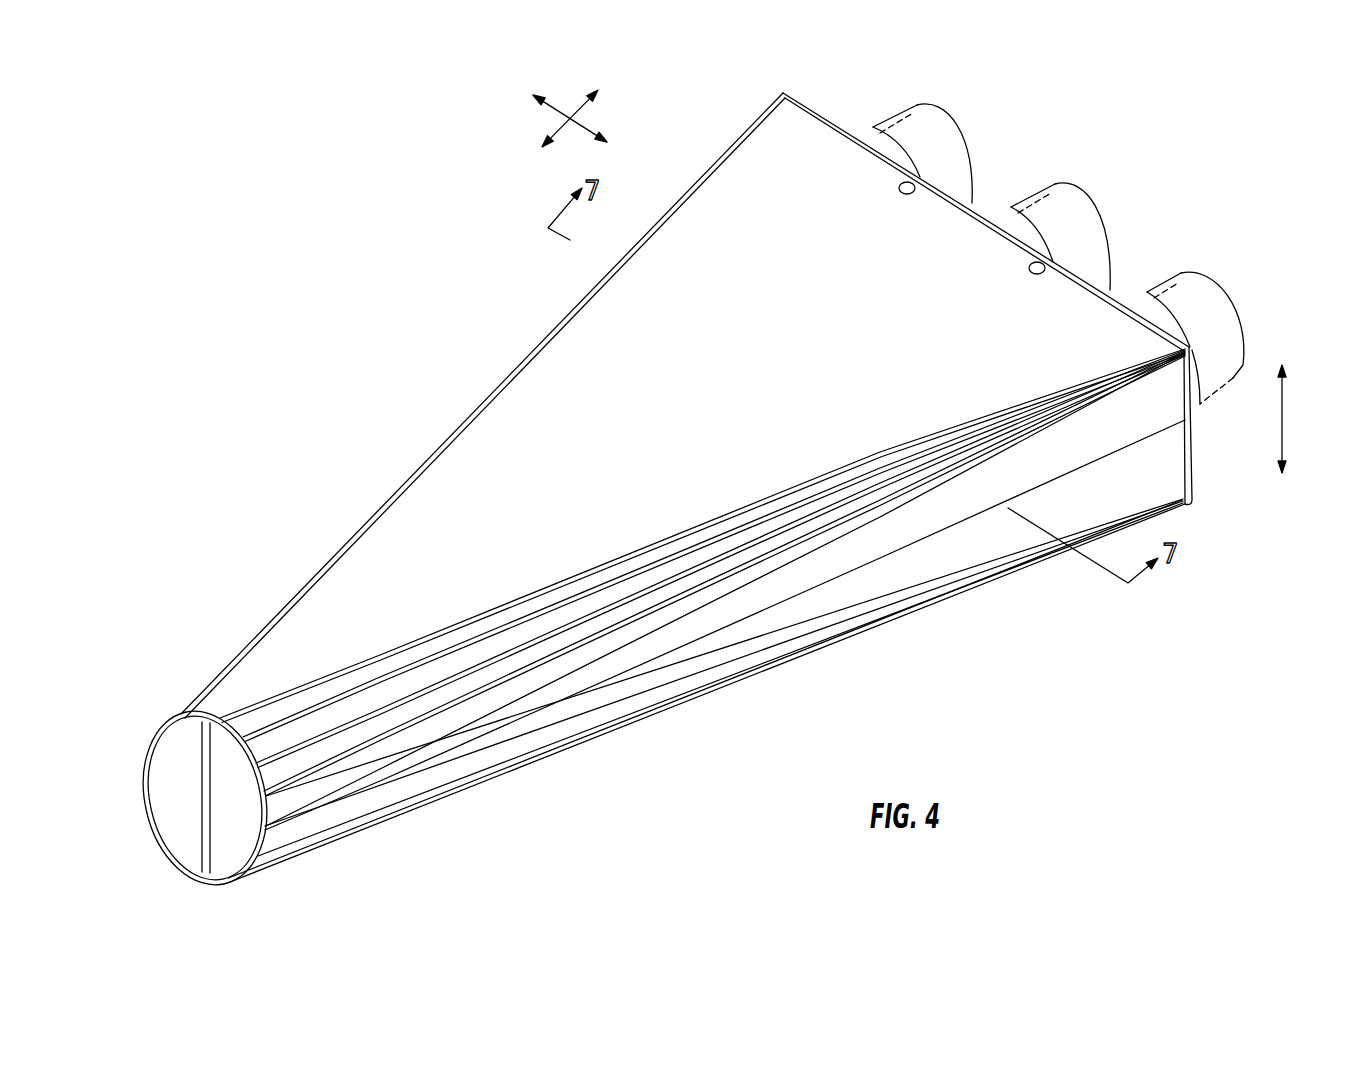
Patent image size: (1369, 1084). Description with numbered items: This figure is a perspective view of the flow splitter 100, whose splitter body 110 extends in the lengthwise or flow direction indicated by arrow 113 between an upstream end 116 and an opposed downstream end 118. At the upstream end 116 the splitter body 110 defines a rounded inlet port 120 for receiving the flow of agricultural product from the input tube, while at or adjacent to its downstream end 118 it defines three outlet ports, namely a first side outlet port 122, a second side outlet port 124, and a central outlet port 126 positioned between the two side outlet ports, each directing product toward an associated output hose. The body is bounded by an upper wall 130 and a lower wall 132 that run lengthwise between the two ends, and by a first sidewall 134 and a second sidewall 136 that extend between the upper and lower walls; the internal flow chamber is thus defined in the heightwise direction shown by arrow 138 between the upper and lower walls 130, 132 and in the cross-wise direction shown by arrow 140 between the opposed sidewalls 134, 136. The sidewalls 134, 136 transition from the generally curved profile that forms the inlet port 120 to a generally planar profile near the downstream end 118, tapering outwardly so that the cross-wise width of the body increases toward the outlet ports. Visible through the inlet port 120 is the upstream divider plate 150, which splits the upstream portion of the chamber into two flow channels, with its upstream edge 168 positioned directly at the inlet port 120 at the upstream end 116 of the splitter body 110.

The flow splitter 100 is at (672, 503).
The splitter body 110 is at (672, 503).
The lengthwise or flow direction 113 is at (543, 96).
The upstream end 116 is at (169, 808).
The downstream end 118 is at (1021, 141).
The inlet port 120 is at (150, 815).
The first side outlet port 122 is at (917, 104).
The second side outlet port 124 is at (1226, 300).
The central outlet port 126 is at (1078, 207).
The upper wall 130 is at (592, 345).
The lower wall 132 is at (645, 723).
The first sidewall 134 is at (350, 522).
The second sidewall 136 is at (835, 605).
The heightwise direction 138 is at (1283, 405).
The cross-wise direction 140 is at (563, 108).
The upstream divider plate 150 is at (223, 840).
The upstream edge 168 is at (203, 843).